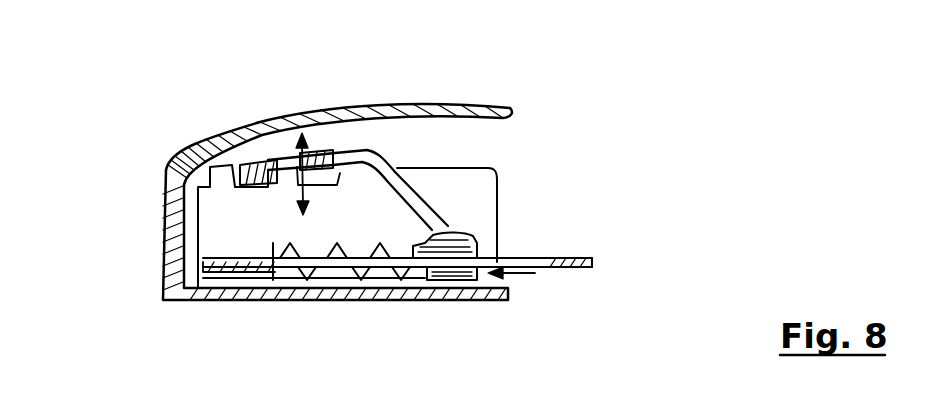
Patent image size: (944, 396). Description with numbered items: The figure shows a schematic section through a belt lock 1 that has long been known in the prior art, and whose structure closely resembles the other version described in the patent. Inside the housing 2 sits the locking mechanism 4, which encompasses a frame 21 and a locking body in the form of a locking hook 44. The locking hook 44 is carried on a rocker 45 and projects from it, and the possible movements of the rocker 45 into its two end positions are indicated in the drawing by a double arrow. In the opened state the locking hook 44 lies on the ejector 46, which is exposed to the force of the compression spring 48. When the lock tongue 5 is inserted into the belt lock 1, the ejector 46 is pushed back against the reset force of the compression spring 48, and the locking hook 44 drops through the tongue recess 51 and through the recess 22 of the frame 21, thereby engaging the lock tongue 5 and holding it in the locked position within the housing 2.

The belt lock 1 is at (290, 189).
The housing 2 is at (163, 230).
The frame 21 is at (205, 290).
The recess of the frame 22 is at (293, 283).
The locking mechanism 4 is at (401, 144).
The locking hook 44 is at (490, 223).
The rocker 45 is at (355, 155).
The ejector 46 is at (470, 286).
The compression spring 48 is at (367, 287).
The lock tongue 5 is at (462, 254).
The tongue recess 51 is at (545, 256).